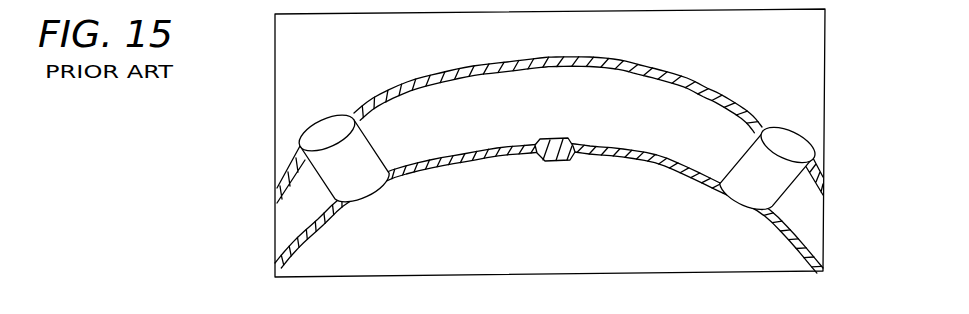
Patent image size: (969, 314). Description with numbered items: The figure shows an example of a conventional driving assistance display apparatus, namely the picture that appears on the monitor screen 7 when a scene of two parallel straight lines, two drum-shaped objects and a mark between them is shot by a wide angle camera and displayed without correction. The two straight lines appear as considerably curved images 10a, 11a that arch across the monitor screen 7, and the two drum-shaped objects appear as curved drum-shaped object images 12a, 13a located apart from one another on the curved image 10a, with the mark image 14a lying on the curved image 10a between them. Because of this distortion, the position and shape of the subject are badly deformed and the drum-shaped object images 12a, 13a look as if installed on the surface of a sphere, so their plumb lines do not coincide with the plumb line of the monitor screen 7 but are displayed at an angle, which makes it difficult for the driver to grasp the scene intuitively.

The monitor screen 7 is at (827, 133).
The curved image 10a is at (462, 168).
The curved image 11a is at (477, 78).
The curved drum-shaped object image 12a is at (738, 198).
The curved drum-shaped object image 13a is at (363, 187).
The mark image 14a is at (552, 162).